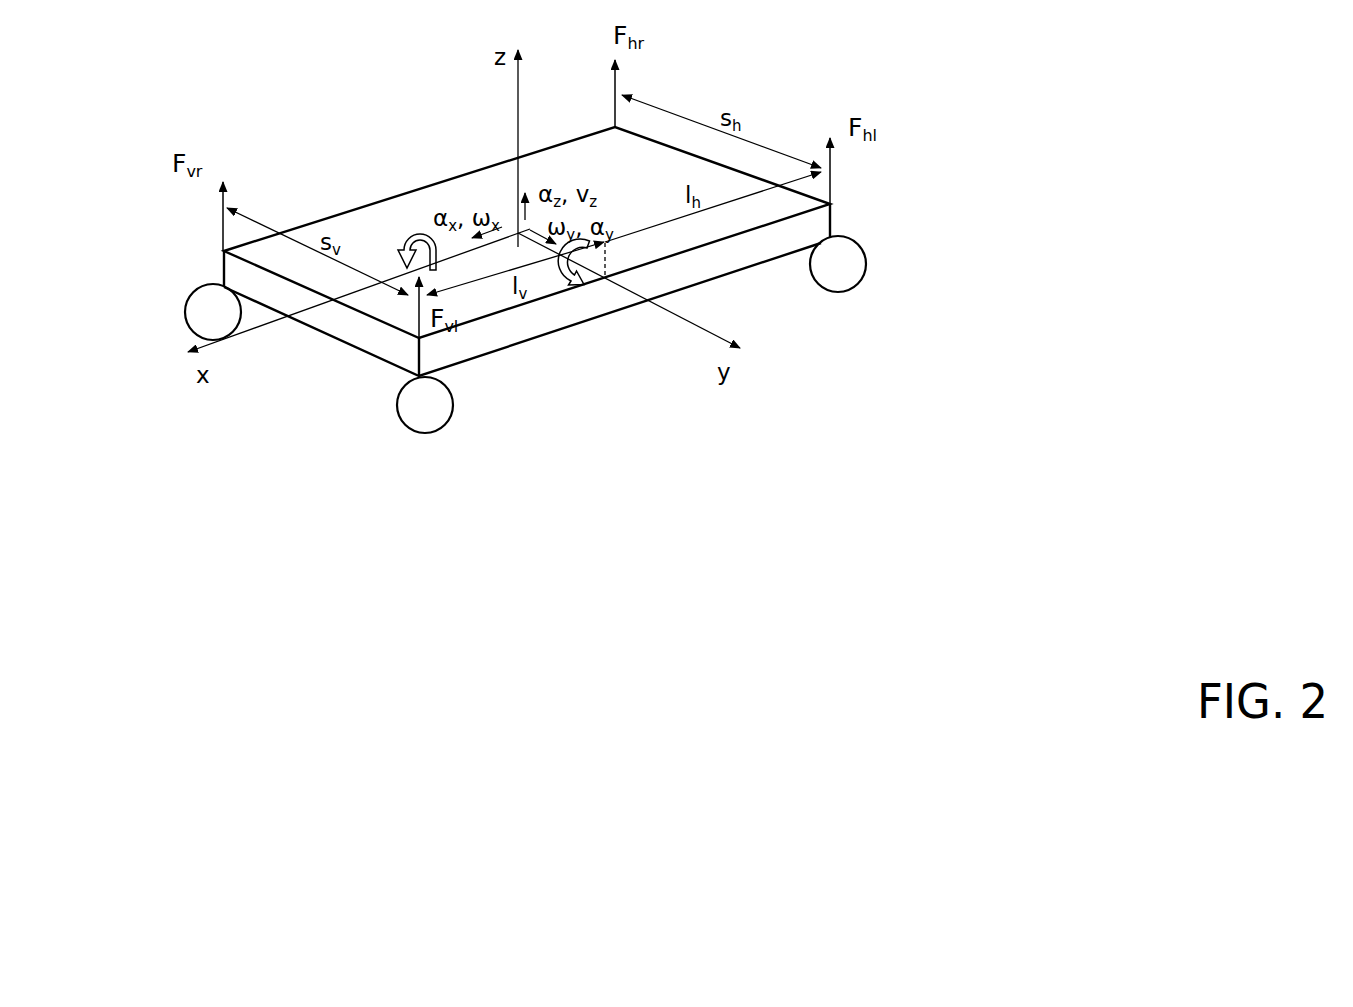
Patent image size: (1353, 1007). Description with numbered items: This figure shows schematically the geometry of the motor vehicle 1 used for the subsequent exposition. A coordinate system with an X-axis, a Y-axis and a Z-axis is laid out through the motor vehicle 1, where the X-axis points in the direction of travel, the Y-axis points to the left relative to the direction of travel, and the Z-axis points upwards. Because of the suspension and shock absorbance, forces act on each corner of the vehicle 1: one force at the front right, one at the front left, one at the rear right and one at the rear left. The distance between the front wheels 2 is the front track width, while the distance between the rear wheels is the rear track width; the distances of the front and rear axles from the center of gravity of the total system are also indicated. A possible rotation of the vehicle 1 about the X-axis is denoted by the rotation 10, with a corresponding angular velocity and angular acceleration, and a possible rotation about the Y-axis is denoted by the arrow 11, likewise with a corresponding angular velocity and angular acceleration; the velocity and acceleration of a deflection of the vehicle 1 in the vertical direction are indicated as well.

The motor vehicle 1 is at (364, 102).
The front wheels 2 is at (208, 312).
The rotation about the X-axis 10 is at (417, 222).
The arrow denoting rotation about the Y-axis 11 is at (578, 279).